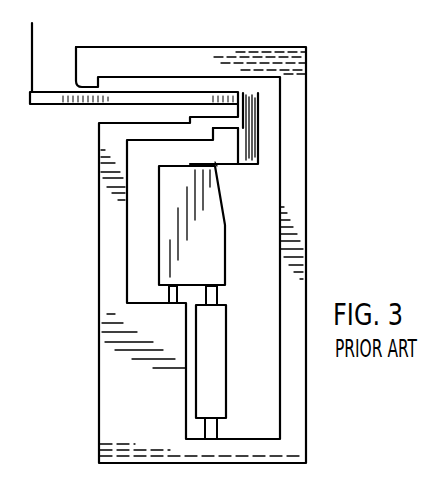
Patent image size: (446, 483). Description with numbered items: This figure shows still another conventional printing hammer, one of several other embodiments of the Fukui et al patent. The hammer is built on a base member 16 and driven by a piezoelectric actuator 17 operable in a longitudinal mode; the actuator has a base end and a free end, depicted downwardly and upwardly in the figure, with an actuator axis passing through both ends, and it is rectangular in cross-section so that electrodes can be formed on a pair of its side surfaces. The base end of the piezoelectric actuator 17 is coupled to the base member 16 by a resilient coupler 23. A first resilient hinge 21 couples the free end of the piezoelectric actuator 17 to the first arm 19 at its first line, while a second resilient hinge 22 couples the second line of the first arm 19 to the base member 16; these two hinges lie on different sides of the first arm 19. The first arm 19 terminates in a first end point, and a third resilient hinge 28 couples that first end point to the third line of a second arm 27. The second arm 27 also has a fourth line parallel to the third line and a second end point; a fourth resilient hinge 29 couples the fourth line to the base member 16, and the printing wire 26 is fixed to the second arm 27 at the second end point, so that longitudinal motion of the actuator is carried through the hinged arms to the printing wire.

The base member 16 is at (100, 343).
The piezoelectric actuator 17 is at (222, 366).
The first arm 19 is at (223, 247).
The first resilient hinge 21 is at (218, 296).
The second resilient hinge 22 is at (169, 294).
The resilient coupler 23 is at (218, 431).
The printing wire 26 is at (33, 50).
The second arm 27 is at (76, 106).
The third resilient hinge 28 is at (197, 153).
The fourth resilient hinge 29 is at (223, 128).